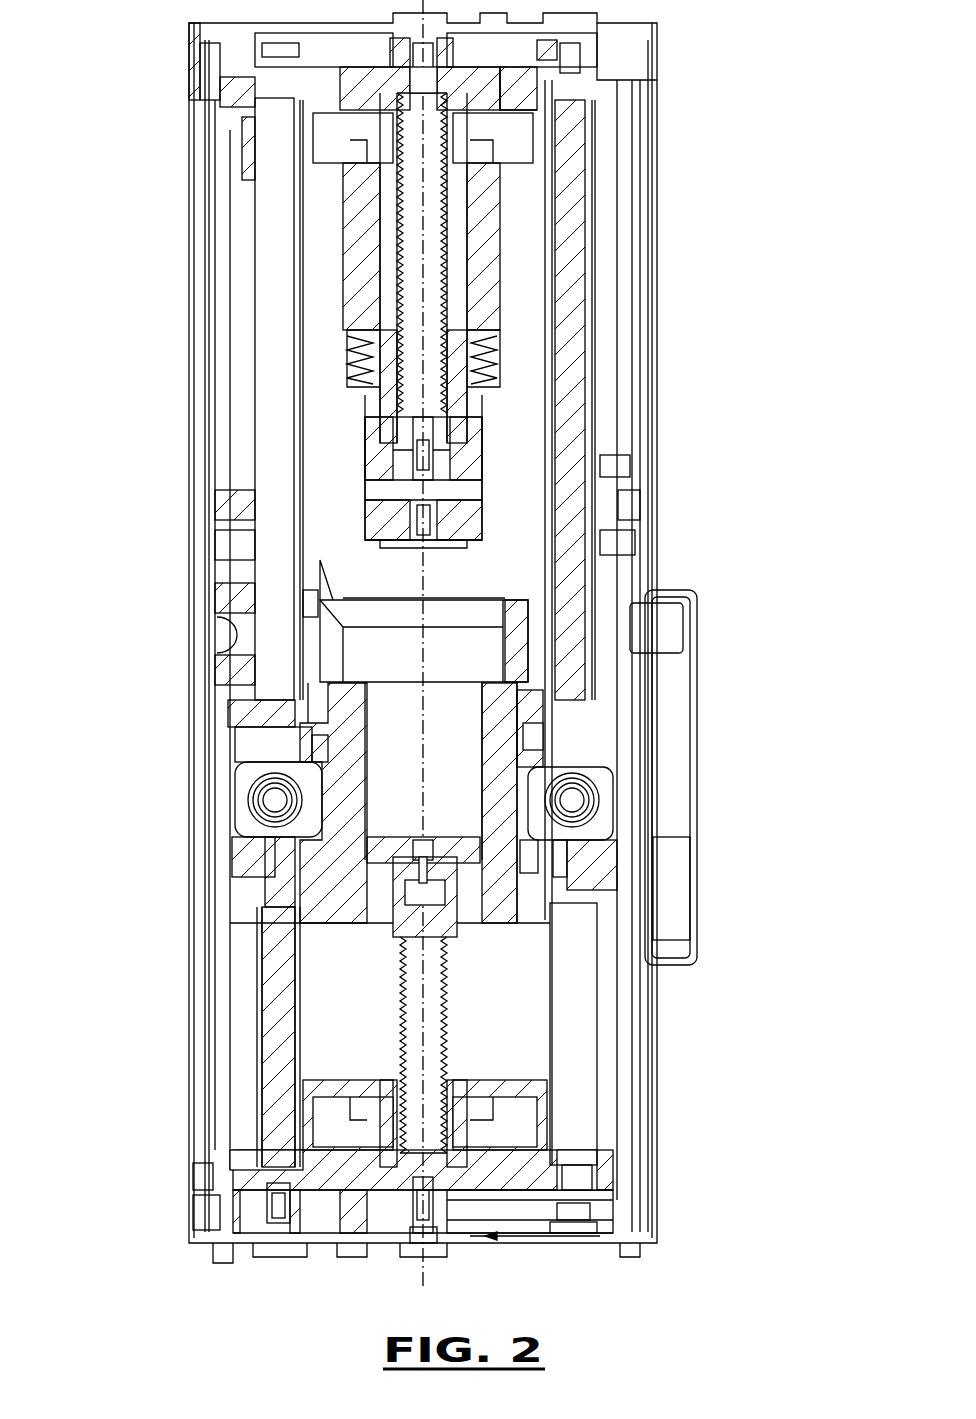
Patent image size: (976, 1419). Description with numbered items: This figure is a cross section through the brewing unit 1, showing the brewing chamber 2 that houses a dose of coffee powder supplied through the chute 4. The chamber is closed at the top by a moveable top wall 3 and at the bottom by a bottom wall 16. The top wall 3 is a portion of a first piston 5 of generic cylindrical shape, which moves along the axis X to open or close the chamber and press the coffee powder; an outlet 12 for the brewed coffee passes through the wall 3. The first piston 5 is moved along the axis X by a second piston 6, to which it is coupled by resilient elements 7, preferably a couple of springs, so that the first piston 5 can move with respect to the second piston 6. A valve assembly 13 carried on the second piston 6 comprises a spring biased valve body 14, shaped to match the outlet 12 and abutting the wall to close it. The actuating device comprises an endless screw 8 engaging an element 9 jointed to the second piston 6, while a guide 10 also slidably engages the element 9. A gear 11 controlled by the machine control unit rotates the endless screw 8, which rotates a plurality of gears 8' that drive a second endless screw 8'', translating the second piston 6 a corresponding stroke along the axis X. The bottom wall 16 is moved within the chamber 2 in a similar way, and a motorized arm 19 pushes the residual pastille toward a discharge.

The brewing unit 1 is at (145, 720).
The brewing chamber 2 is at (402, 772).
The top wall 3 is at (513, 590).
The chute 4 is at (453, 545).
The first piston 5 is at (353, 447).
The second piston 6 is at (467, 427).
The resilient elements 7 is at (497, 333).
The endless screw 8 is at (668, 400).
The gears 8' is at (630, 64).
The second endless screw 8'' is at (290, 595).
The element 9 is at (513, 175).
The guide 10 is at (263, 280).
The gear 11 is at (578, 828).
The outlet 12 is at (408, 503).
The valve assembly 13 is at (437, 473).
The valve body 14 is at (405, 523).
The bottom wall 16 is at (402, 843).
The motorized arm 19 is at (424, 641).
The axis X is at (425, 1275).